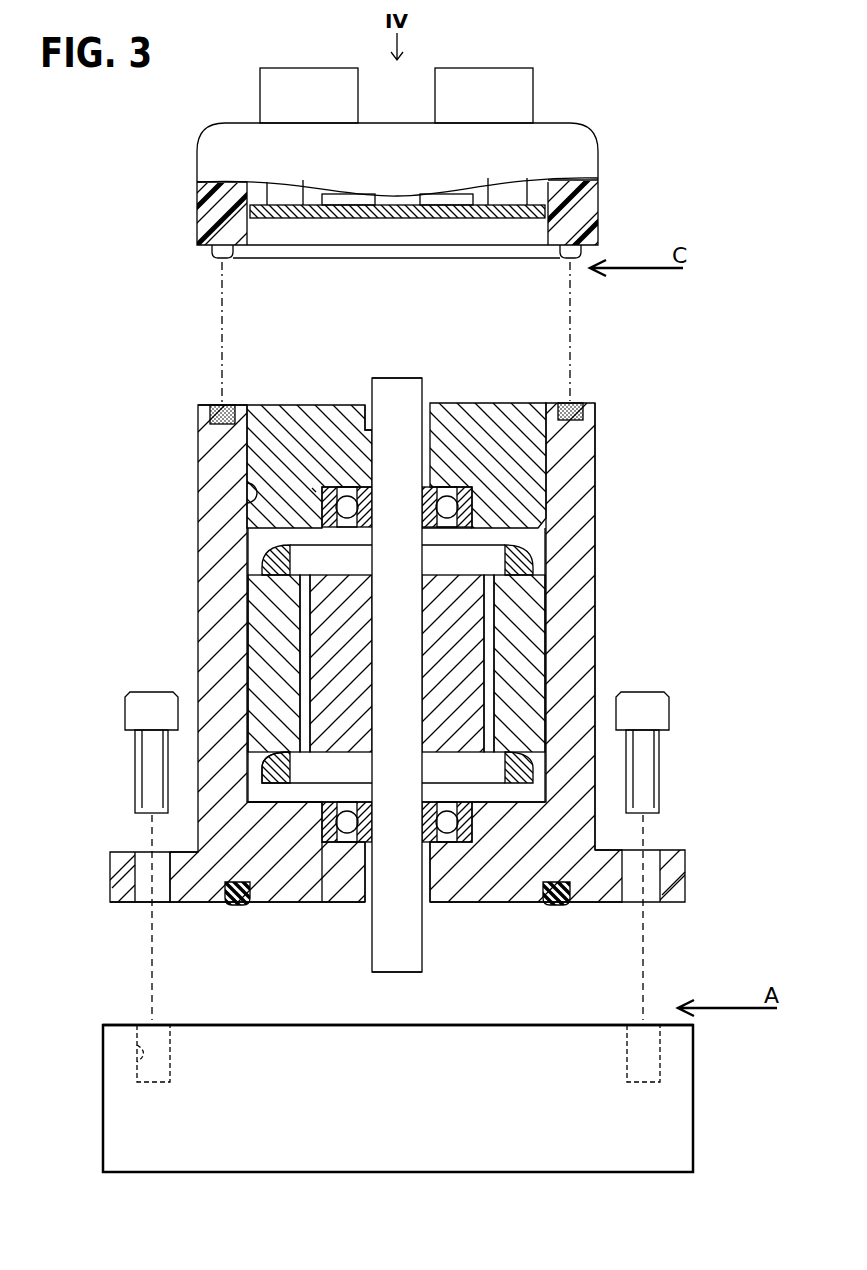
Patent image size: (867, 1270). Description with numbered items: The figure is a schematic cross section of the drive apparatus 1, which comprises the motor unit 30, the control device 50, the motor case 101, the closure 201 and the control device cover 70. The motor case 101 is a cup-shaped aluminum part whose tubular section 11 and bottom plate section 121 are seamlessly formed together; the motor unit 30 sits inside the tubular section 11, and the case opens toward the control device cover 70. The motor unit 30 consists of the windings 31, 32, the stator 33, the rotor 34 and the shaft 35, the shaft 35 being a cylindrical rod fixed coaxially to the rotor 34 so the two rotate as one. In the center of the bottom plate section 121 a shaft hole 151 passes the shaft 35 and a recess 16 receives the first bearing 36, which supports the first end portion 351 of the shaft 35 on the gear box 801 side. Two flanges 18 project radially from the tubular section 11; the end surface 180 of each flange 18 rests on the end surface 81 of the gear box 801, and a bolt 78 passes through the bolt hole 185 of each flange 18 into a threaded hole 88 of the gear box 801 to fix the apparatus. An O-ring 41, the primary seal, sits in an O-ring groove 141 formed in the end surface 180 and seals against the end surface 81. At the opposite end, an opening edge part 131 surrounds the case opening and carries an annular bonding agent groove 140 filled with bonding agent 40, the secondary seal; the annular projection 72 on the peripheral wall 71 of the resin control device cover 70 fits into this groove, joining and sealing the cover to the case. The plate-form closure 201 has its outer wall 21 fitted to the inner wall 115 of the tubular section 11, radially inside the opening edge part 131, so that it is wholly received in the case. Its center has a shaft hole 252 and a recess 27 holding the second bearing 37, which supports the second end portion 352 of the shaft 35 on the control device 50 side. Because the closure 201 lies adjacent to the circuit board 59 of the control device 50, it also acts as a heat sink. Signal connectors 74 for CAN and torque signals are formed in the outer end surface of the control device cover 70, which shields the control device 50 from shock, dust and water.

The drive apparatus 1 is at (592, 67).
The tubular section 11 is at (220, 580).
The recess 16 is at (318, 834).
The flange 18 is at (128, 888).
The outer wall 21 is at (247, 455).
The recess 27 is at (313, 492).
The motor unit 30 is at (677, 548).
The winding 31 is at (520, 562).
The winding 32 is at (397, 767).
The stator 33 is at (530, 592).
The rotor 34 is at (465, 625).
The shaft 35 is at (410, 655).
The first bearing 36 is at (470, 826).
The second bearing 37 is at (470, 501).
The bonding agent 40 is at (572, 403).
The O-ring 41 is at (557, 906).
The control device 50 is at (406, 180).
The circuit board 59 is at (548, 210).
The control device cover 70 is at (613, 138).
The peripheral wall 71 is at (205, 213).
The annular projection 72 is at (219, 259).
The signal connector 74 is at (485, 80).
The bolt 78 is at (150, 705).
The end surface 81 is at (585, 1023).
The threaded hole 88 is at (137, 1063).
The motor case 101 is at (580, 512).
The inner wall 115 is at (250, 497).
The bottom plate section 121 is at (283, 830).
The opening edge part 131 is at (205, 404).
The bonding agent groove 140 is at (228, 404).
The O-ring groove 141 is at (237, 906).
The shaft hole 151 is at (372, 896).
The end surface 180 is at (500, 903).
The bolt hole 185 is at (143, 895).
The closure 201 is at (482, 430).
The shaft hole 252 is at (366, 428).
The first end portion 351 is at (400, 962).
The second end portion 352 is at (398, 388).
The gear box 801 is at (670, 1110).